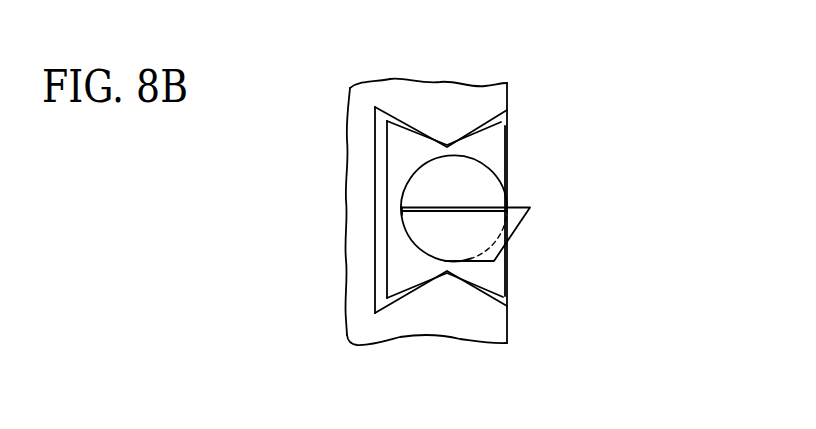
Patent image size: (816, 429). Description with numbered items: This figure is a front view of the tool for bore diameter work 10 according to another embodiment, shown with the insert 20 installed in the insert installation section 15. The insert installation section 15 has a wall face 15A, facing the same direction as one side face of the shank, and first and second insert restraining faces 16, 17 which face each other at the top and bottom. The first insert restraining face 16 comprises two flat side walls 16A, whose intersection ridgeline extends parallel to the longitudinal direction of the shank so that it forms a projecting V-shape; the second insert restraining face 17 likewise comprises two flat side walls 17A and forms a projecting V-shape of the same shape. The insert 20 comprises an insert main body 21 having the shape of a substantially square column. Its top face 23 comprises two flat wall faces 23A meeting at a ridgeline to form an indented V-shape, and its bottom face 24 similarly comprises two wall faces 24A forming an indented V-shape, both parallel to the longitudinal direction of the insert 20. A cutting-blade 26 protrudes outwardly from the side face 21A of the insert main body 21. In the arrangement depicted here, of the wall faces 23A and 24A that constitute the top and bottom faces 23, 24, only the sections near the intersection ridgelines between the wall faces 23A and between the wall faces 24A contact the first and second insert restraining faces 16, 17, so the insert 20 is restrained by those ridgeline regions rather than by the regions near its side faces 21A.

The tool for bore diameter work 10 is at (531, 96).
The insert installation section 15 is at (518, 183).
The wall face 15A is at (411, 181).
The first insert restraining face 16 is at (444, 197).
The side wall 16A is at (386, 138).
The second insert restraining face 17 is at (435, 304).
The side wall 17A is at (388, 286).
The insert 20 is at (520, 166).
The insert main body 21 is at (518, 148).
The side face 21A is at (377, 240).
The top face 23 is at (410, 50).
The wall face 23A is at (386, 140).
The bottom face 24 is at (530, 370).
The wall face 24A is at (410, 287).
The cutting-blade 26 is at (524, 207).